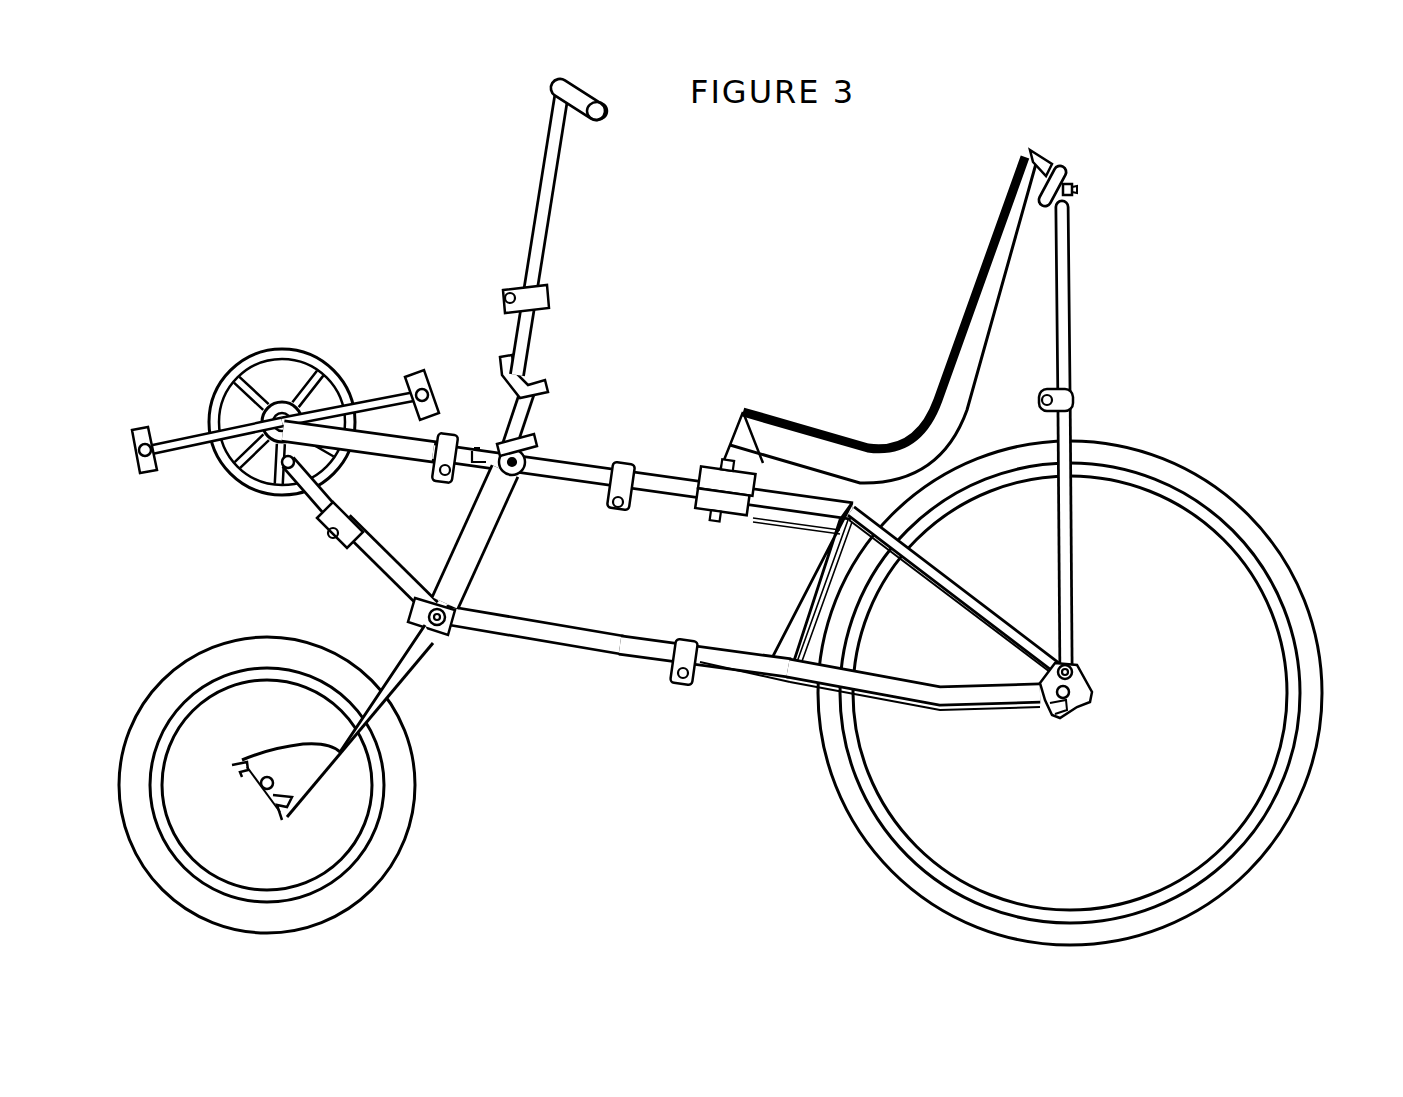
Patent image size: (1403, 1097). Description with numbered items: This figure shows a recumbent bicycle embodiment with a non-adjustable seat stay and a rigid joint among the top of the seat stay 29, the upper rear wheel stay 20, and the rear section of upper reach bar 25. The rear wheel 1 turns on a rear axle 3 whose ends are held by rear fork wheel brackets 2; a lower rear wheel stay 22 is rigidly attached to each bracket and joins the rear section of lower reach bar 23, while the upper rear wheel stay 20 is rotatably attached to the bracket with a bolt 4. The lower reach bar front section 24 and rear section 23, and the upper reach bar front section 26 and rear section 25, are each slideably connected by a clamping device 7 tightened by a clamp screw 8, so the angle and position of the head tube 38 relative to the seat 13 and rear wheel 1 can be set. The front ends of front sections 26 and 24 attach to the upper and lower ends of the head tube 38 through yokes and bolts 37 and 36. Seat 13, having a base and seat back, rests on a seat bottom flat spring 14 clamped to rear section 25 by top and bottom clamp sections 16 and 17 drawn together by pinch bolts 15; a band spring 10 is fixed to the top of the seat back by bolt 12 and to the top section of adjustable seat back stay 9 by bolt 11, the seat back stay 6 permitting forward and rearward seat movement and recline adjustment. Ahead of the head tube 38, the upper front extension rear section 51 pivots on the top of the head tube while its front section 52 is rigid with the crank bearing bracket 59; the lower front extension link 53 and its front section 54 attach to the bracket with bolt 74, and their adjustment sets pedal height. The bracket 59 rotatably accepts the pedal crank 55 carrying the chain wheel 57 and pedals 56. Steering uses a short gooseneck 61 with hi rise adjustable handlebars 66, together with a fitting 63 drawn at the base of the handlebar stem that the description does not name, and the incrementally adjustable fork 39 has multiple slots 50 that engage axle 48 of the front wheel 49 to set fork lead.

The rear wheel 1 is at (1236, 525).
The rear fork wheel brackets 2 is at (1082, 690).
The rear axle 3 is at (1070, 706).
The bolt 4 is at (1076, 665).
The seat back stay 6 is at (1068, 480).
The clamping device 7 is at (548, 300).
The clamp screw 8 is at (506, 292).
The top section of adjustable seat back stay 9 is at (1073, 306).
The band spring 10 is at (1054, 175).
The bolt 11 is at (1076, 188).
The bolt 12 is at (1036, 152).
The seat 13 is at (995, 272).
The seat bottom flat spring 14 is at (765, 469).
The pinch bolts 15 is at (720, 520).
The top section of clamping device 16 is at (713, 471).
The bottom section of clamping device 17 is at (710, 508).
The upper rear wheel stay 20 is at (976, 590).
The lower rear wheel stay 22 is at (930, 695).
The rear section of lower reach bar 23 is at (736, 668).
The front section of lower reach bar 24 is at (578, 642).
The rear section of upper reach bar 25 is at (790, 513).
The front section of upper reach bar 26 is at (568, 478).
The seat stay 29 is at (808, 592).
The yoke and bolts 36 is at (446, 626).
The yoke and bolts 37 is at (527, 458).
The head tube 38 is at (480, 542).
The fork 39 is at (422, 687).
The axle 48 is at (270, 776).
The front wheel 49 is at (390, 841).
The slots 50 is at (284, 808).
The rear section of adjustable upper front extension 51 is at (481, 447).
The front section of adjustable upper front extension 52 is at (371, 436).
The lower front extension link 53 is at (410, 596).
The front section of lower front extension link 54 is at (310, 503).
The pedal crank 55 is at (192, 442).
The pedals 56 is at (419, 382).
The chain wheel 57 is at (277, 352).
The crank bearing bracket 59 is at (296, 414).
The short gooseneck 61 is at (546, 410).
The bracket 63 is at (545, 376).
The hi rise adjustable handlebars 66 is at (548, 234).
The bolt 74 is at (272, 470).